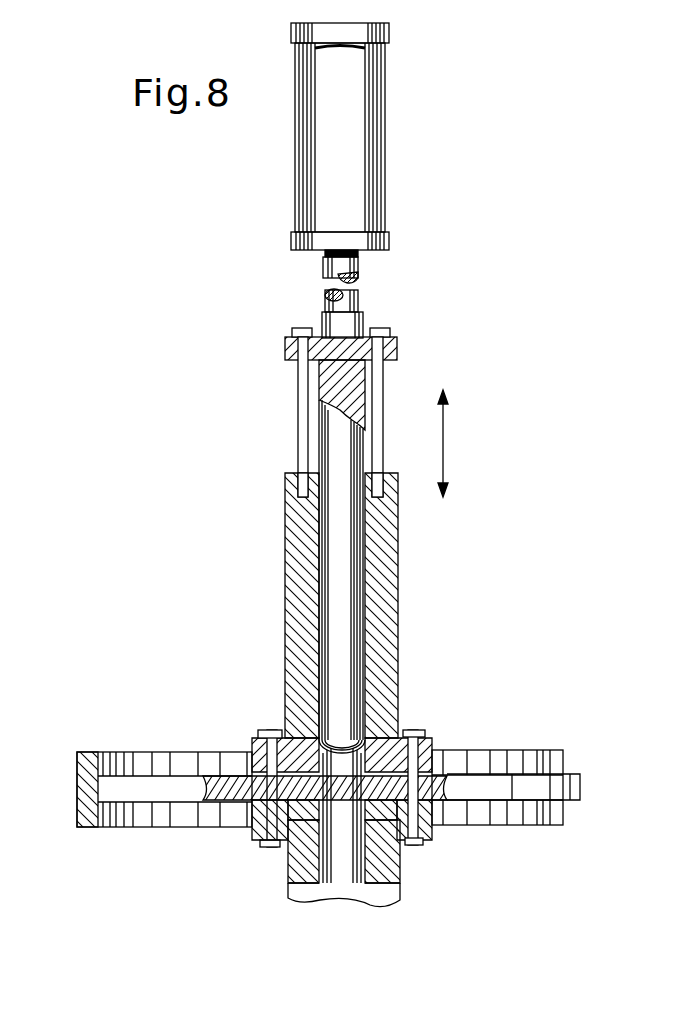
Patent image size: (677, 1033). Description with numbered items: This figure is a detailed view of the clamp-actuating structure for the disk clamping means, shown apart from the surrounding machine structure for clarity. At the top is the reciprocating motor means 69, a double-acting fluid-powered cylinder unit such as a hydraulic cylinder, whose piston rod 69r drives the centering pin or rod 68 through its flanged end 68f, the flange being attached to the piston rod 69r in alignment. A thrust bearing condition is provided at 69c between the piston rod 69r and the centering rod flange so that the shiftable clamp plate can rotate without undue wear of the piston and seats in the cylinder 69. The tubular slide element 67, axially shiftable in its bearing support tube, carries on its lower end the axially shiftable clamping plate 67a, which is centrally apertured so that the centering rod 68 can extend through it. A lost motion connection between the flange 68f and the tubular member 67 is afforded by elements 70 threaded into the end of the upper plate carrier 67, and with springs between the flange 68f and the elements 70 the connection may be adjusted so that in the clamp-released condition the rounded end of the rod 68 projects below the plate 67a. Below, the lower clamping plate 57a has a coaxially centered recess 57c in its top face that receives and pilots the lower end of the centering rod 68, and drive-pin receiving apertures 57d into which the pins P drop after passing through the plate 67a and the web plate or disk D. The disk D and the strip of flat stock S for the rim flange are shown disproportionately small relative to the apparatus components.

The reciprocating motor means 69 is at (385, 143).
The piston rod 69r is at (360, 268).
The thrust bearing 69c is at (322, 325).
The flanged end 68f is at (398, 347).
The connection bolts 70 is at (298, 412).
The centering rod 68 is at (363, 600).
The tubular slide element 67 is at (286, 554).
The clamping plate 67a is at (252, 738).
The strip of straight flat stock S is at (556, 748).
The web plate or disk D is at (583, 783).
The pins P is at (410, 730).
The clamping plate 57a is at (252, 838).
The drive-pin receiving apertures 57d is at (415, 845).
The recess 57c is at (375, 868).